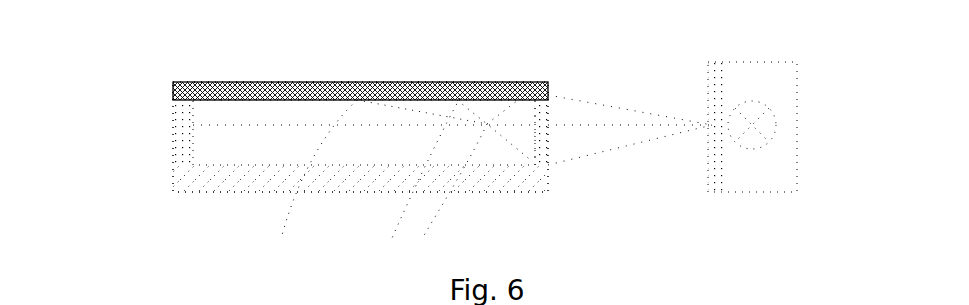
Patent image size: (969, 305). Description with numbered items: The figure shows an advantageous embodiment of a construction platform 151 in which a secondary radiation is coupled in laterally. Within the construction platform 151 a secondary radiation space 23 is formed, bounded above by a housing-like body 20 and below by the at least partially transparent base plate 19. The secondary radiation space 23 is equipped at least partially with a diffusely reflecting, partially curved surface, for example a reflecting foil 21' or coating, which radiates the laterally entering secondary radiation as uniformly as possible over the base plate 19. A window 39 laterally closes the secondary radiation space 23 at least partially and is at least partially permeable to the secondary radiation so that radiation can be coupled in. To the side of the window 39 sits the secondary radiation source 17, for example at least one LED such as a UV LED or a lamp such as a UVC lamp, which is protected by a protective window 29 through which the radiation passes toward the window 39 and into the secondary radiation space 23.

The construction platform 151 is at (136, 50).
The housing 20 is at (180, 86).
The reflecting foil 21' is at (360, 63).
The secondary radiation space 23 is at (215, 157).
The base plate 19 is at (238, 173).
The window 39 is at (541, 146).
The protective window 29 is at (717, 178).
The secondary radiation source 17 is at (770, 124).